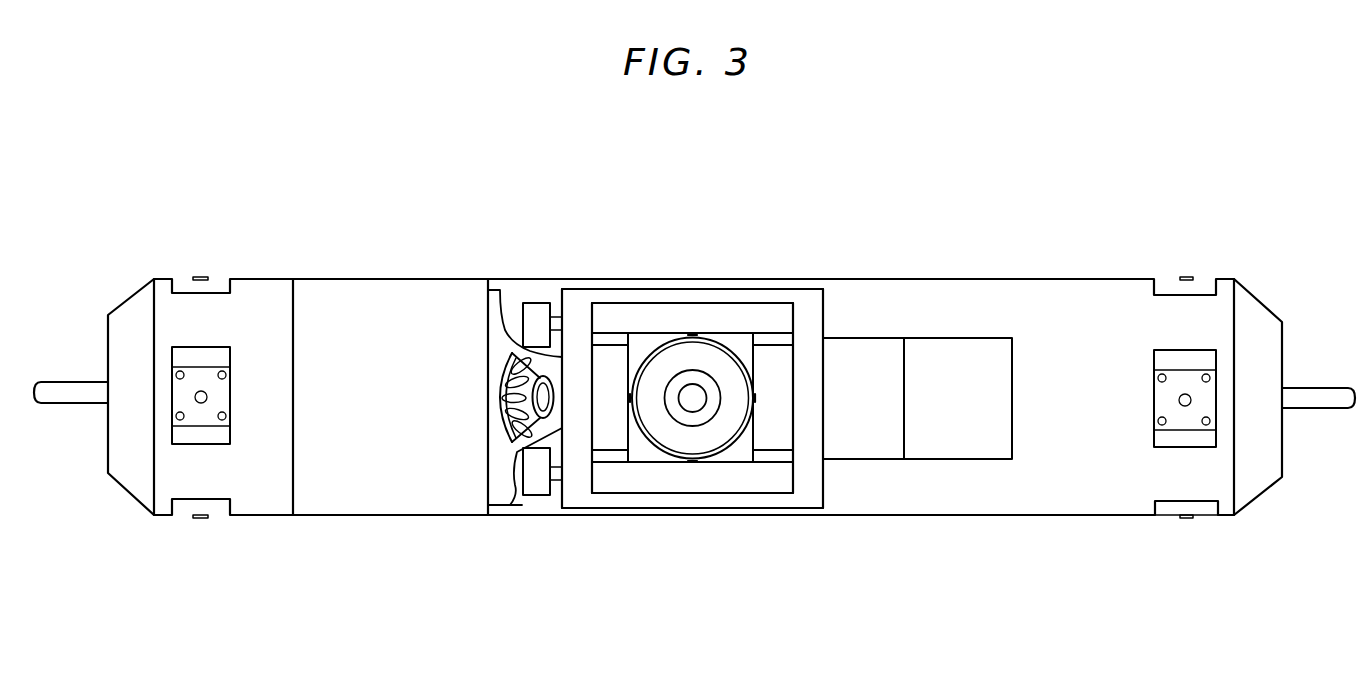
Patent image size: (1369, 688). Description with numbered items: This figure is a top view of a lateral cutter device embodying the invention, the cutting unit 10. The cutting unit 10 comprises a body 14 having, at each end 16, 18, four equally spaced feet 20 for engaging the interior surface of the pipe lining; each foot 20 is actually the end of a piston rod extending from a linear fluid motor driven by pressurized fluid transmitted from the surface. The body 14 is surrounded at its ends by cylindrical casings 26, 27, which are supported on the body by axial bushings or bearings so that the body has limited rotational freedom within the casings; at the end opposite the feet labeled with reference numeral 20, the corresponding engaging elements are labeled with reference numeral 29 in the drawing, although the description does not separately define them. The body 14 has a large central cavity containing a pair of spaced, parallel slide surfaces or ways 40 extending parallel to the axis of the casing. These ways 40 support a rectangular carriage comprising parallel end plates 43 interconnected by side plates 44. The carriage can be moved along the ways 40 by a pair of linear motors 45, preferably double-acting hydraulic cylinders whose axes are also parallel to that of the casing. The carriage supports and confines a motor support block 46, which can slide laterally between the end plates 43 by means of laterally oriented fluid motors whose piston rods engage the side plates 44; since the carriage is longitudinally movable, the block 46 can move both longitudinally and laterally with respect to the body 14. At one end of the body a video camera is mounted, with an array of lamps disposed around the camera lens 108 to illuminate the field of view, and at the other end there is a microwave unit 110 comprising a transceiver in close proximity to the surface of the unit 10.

The cutting unit 10 is at (524, 572).
The body 14 is at (397, 413).
The end of body 16 is at (252, 252).
The end of body 18 is at (1102, 250).
The foot 20 is at (1190, 399).
The cylindrical casing 26 is at (253, 503).
The cylindrical casing 27 is at (1115, 505).
The left electrical connector plate 29 is at (175, 279).
The ways 40 is at (545, 291).
The end plates 43 is at (573, 325).
The side plates 44 is at (730, 296).
The linear motors 45 is at (511, 305).
The motor support block 46 is at (648, 455).
The camera lens 108 is at (554, 395).
The microwave unit 110 is at (878, 417).